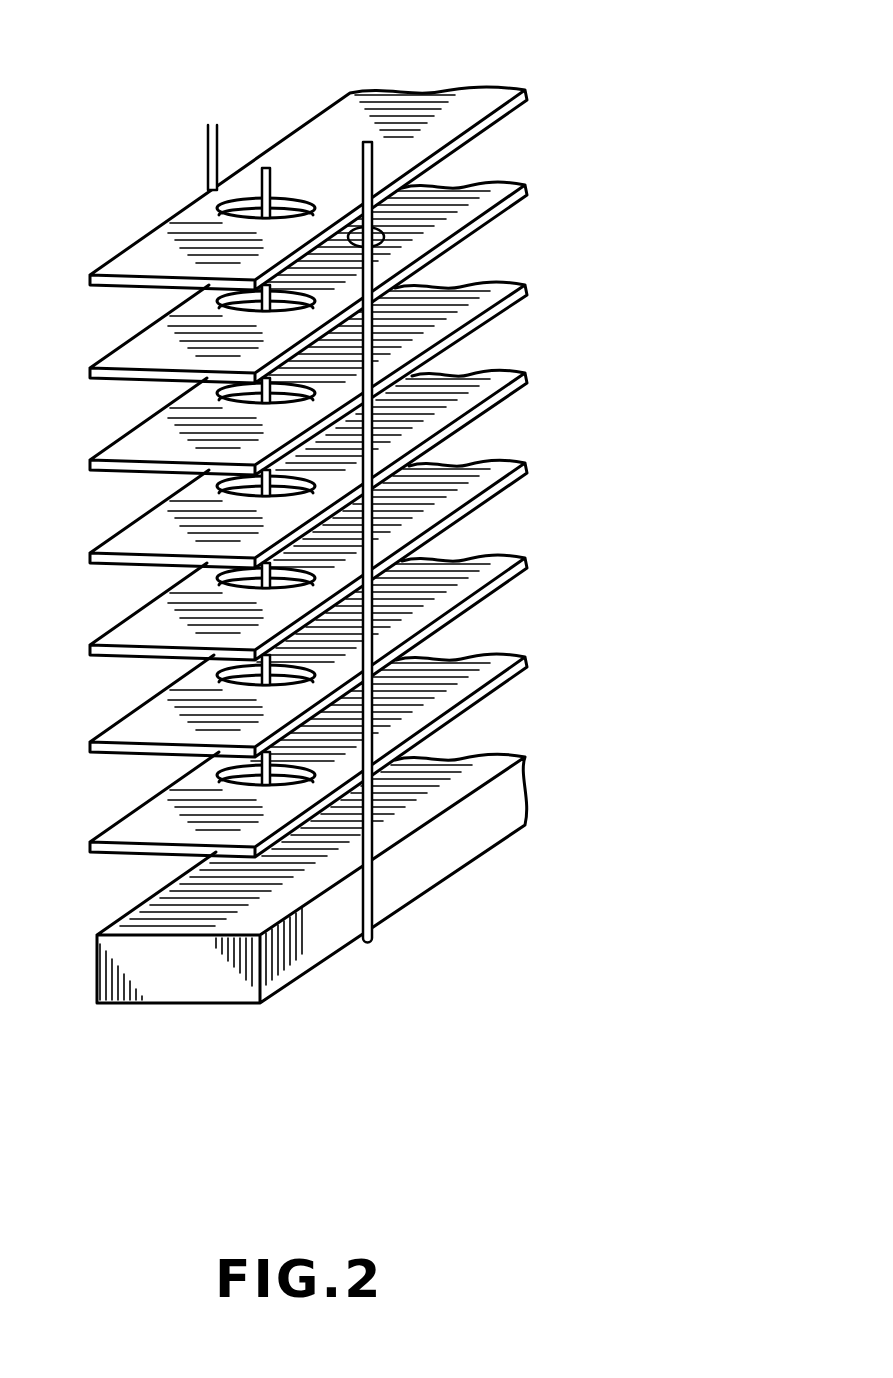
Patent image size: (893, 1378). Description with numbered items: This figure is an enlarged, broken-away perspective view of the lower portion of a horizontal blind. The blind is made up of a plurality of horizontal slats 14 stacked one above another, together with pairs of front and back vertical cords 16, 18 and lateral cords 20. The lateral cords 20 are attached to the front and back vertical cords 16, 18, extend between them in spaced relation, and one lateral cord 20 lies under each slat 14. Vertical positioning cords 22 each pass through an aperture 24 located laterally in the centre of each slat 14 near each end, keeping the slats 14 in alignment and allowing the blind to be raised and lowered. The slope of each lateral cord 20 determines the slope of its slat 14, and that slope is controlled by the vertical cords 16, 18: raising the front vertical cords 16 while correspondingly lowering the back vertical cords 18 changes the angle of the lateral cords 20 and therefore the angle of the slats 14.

The horizontal slats 14 is at (478, 368).
The front vertical cords 16 is at (376, 905).
The back vertical cords 18 is at (206, 168).
The lateral cords 20 is at (384, 229).
The vertical positioning cords 22 is at (275, 180).
The aperture 24 is at (247, 197).